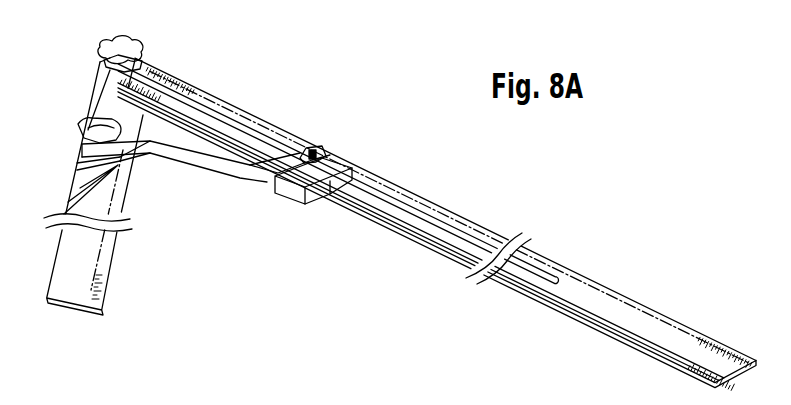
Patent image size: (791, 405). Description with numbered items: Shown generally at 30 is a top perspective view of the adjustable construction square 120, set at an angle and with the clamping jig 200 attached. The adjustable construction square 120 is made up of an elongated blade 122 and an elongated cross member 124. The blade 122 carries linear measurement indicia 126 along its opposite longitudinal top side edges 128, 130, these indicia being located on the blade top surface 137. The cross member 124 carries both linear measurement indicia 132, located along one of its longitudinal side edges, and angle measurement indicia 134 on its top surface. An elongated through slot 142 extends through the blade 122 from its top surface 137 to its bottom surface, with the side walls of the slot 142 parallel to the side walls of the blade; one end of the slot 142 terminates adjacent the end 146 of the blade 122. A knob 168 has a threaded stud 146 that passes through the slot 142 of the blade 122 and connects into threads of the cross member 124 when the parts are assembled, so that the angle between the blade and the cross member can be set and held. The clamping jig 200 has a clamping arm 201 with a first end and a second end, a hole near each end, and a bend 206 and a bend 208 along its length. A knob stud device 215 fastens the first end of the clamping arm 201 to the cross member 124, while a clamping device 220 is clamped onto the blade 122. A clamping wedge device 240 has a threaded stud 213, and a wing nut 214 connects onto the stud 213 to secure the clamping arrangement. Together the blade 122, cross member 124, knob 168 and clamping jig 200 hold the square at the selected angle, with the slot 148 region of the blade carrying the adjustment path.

The adjustable construction square view 30 is at (408, 70).
The adjustable construction square 120 is at (298, 131).
The blade 122 is at (622, 290).
The cross member 124 is at (88, 97).
The linear measurement indicia 126 is at (180, 77).
The longitudinal top side edge 128 is at (686, 368).
The longitudinal top side edge 130 is at (732, 348).
The linear measurement indicia 132 is at (108, 300).
The angle measurement indicia 134 is at (78, 168).
The top surface 137 is at (613, 317).
The slot 142 is at (437, 205).
The threaded stud 146 is at (99, 67).
The slot 148 is at (557, 276).
The knob 168 is at (131, 44).
The clamping jig 200 is at (211, 172).
The clamping arm 201 is at (197, 178).
The bend 206 is at (262, 183).
The bend 208 is at (135, 163).
The threaded stud 213 is at (308, 152).
The wing nut 214 is at (322, 155).
The knob stud device 215 is at (86, 120).
The clamping device 220 is at (292, 200).
The clamping wedge device 240 is at (315, 203).